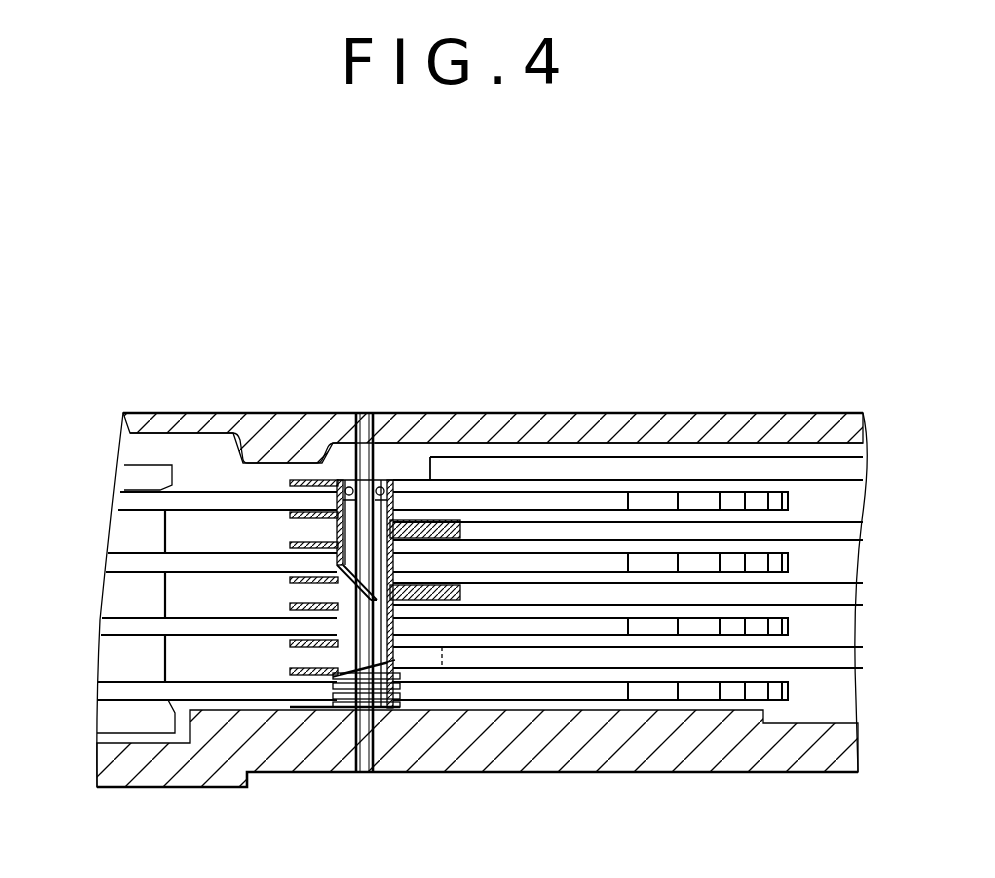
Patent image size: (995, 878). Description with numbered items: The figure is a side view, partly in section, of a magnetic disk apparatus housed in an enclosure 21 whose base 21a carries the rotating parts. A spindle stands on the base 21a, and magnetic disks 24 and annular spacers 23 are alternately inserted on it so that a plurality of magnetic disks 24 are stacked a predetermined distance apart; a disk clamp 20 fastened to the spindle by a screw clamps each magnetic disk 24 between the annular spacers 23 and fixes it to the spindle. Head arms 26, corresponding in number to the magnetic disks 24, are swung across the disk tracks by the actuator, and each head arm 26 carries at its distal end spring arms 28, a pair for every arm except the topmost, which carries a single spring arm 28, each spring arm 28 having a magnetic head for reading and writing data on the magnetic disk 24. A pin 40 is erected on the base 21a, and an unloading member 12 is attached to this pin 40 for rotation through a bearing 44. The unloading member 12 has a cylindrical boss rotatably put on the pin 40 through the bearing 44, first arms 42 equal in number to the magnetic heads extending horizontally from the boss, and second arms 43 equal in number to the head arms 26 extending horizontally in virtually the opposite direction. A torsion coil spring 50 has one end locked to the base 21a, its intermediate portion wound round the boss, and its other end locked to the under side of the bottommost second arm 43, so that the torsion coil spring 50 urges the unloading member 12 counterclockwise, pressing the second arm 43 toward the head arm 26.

The unloading member 12 is at (338, 730).
The disk clamp 20 is at (140, 477).
The enclosure 21 is at (243, 425).
The base 21a is at (132, 787).
The annular spacers 23 is at (128, 595).
The magnetic disks 24 is at (207, 495).
The head arms 26 is at (803, 527).
The spring arms 28 is at (443, 417).
The pin 40 is at (365, 413).
The first arms 42 is at (300, 487).
The second arms 43 is at (455, 530).
The bearing 44 is at (402, 415).
The torsion coil spring 50 is at (412, 680).